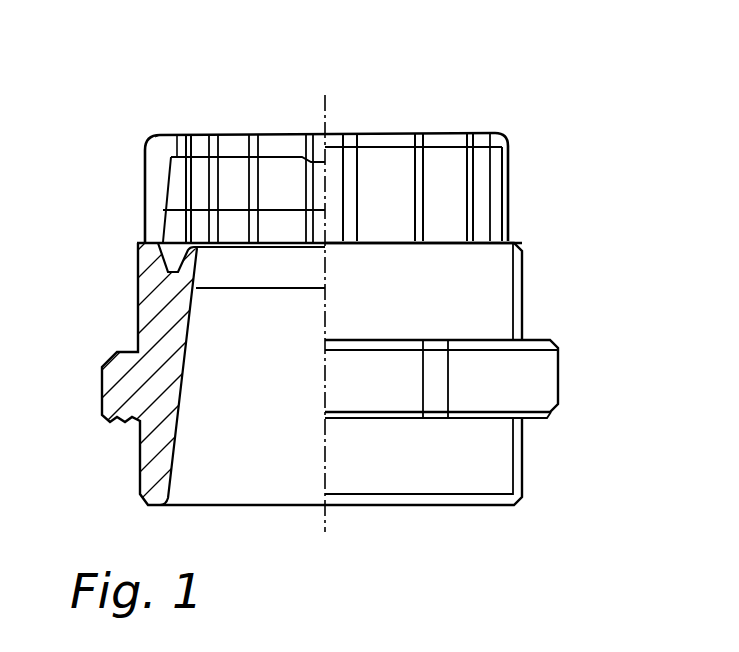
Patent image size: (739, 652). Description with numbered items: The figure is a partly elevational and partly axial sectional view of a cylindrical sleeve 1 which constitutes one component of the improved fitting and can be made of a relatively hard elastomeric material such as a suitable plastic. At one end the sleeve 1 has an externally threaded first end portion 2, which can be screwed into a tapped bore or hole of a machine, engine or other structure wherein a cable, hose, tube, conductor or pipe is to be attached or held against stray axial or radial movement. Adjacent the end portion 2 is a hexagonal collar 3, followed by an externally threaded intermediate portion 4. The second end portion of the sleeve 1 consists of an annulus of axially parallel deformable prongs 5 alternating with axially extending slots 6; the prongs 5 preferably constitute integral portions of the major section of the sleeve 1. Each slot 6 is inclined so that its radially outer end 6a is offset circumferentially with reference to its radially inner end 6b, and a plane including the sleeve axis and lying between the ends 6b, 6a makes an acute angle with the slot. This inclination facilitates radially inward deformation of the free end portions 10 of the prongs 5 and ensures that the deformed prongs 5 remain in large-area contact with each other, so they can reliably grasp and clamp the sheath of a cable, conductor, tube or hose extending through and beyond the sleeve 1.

The cylindrical sleeve 1 is at (207, 99).
The externally threaded first end portion 2 is at (136, 477).
The hexagonal collar 3 is at (532, 380).
The externally threaded intermediate portion 4 is at (135, 314).
The deformable prongs 5 is at (154, 132).
The slots 6 is at (413, 124).
The radially outer end of slot 6a is at (473, 235).
The radially inner end of slot 6b is at (255, 243).
The free end portions of the prongs 10 is at (142, 148).